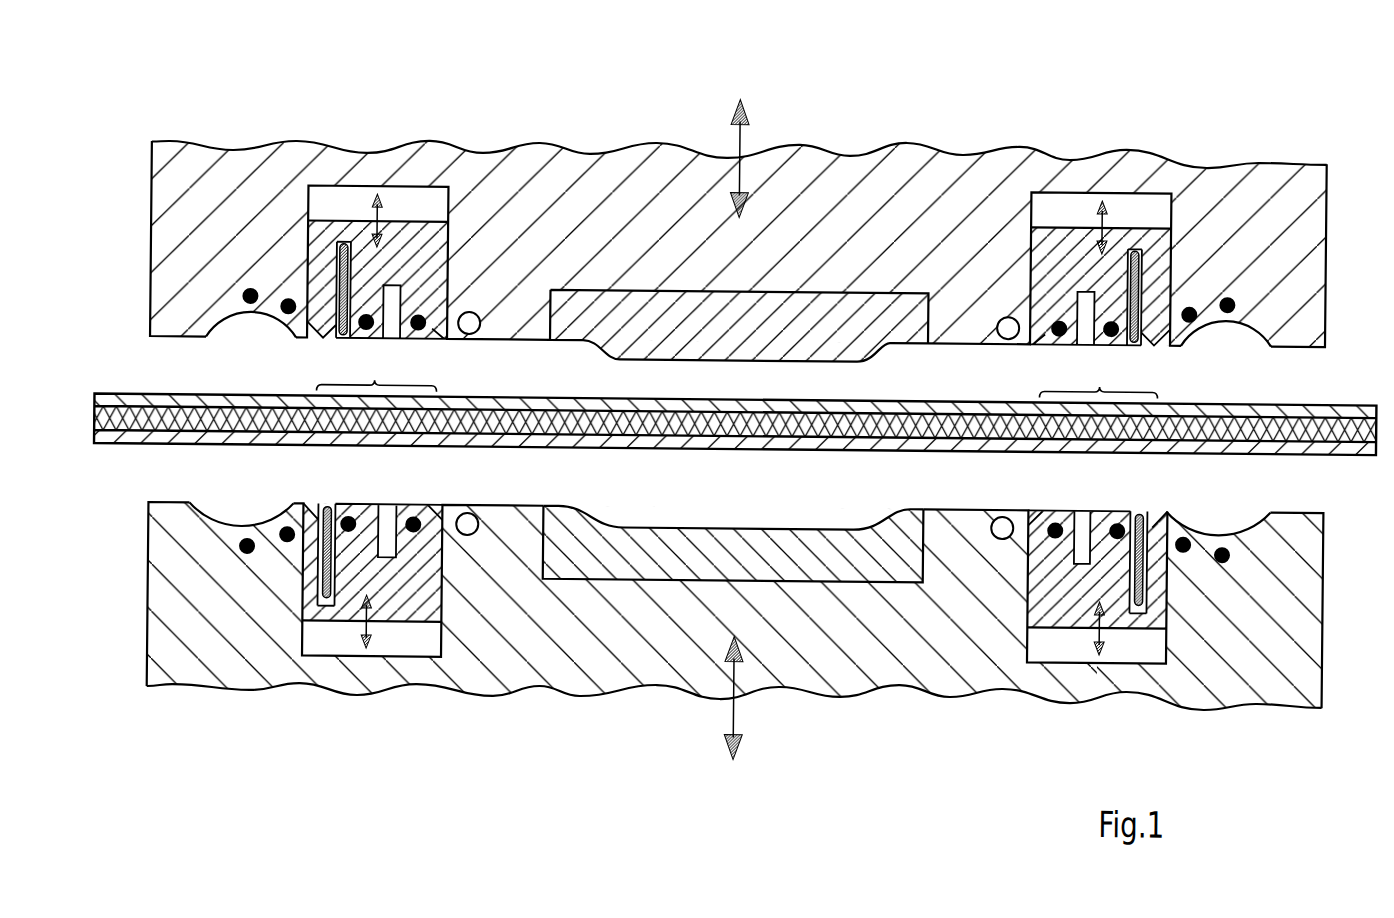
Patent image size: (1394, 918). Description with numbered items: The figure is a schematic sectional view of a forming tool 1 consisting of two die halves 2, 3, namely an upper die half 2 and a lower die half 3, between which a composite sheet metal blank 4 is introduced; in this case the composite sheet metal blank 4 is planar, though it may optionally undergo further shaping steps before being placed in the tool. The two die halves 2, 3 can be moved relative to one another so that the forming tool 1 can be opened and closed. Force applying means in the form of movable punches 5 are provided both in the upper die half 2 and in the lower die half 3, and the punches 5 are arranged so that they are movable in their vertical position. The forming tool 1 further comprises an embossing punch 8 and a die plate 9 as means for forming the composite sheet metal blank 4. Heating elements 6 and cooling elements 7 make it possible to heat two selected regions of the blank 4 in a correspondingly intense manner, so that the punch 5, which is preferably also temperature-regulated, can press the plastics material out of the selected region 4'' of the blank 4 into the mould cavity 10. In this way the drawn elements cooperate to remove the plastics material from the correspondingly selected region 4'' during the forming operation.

The forming tool 1 is at (851, 87).
The upper die half 2 is at (695, 172).
The lower die half 3 is at (696, 653).
The composite sheet metal blank 4 is at (734, 457).
The selected region of the blank 4'' is at (737, 375).
The movable punch 5 is at (358, 240).
The heating elements 6 is at (288, 305).
The cooling elements 7 is at (472, 310).
The embossing punch 8 is at (627, 308).
The die plate 9 is at (632, 543).
The mould cavity 10 is at (212, 329).